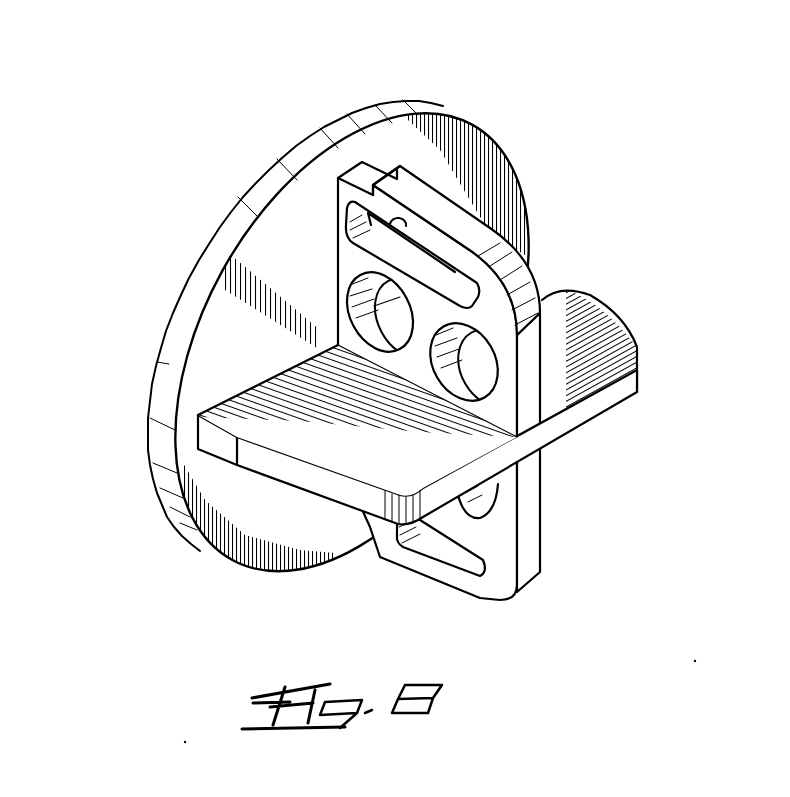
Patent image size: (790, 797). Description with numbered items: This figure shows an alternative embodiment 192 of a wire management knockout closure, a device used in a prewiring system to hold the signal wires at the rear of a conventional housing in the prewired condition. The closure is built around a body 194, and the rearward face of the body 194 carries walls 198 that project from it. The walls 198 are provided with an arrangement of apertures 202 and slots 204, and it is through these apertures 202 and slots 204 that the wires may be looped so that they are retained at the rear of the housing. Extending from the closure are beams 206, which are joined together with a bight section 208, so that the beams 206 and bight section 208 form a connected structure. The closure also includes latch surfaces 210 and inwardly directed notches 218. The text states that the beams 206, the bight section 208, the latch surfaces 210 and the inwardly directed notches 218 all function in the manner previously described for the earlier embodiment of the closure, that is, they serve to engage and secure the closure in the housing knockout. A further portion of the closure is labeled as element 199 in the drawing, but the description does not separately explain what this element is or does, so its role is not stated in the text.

The alternative embodiment of wire management knockout closure 192 is at (205, 195).
The body 194 is at (173, 343).
The walls 198 is at (500, 537).
The cross plate 199 is at (597, 403).
The apertures 202 is at (493, 353).
The slots 204 is at (420, 228).
The beams 206 is at (466, 232).
The bight section 208 is at (530, 367).
The latch surfaces 210 is at (372, 195).
The inwardly directed notches 218 is at (421, 240).